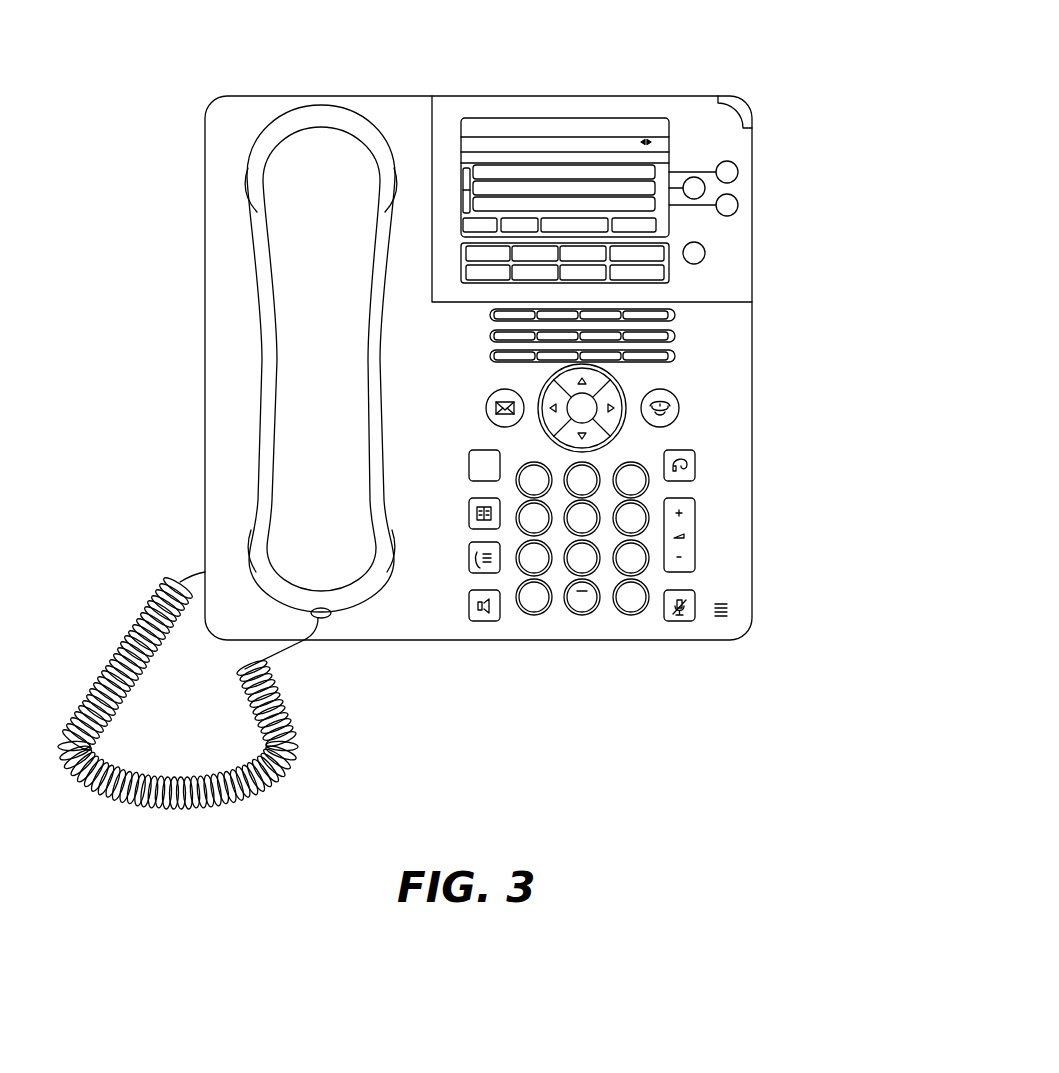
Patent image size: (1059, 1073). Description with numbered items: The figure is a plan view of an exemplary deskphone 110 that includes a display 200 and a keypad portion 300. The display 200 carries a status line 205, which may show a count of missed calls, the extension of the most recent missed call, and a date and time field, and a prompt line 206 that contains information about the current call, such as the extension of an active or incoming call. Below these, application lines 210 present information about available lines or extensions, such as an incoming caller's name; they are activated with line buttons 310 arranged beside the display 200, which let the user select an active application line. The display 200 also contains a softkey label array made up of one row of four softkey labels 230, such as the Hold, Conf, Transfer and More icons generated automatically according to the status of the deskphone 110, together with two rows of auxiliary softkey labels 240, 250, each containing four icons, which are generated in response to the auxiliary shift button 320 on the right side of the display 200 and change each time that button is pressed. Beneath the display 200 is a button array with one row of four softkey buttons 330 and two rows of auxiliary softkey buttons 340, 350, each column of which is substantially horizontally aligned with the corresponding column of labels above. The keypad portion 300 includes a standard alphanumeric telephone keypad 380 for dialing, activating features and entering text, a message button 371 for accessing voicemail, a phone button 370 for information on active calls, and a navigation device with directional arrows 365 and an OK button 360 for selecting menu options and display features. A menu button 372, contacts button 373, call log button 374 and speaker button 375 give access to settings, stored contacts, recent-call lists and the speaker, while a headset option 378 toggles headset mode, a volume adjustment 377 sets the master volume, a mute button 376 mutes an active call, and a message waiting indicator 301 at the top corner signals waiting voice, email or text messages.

The deskphone 110 is at (635, 758).
The display 200 is at (519, 118).
The status line 205 is at (563, 118).
The prompt line 206 is at (660, 153).
The application lines 210 is at (468, 172).
The softkey labels 230 is at (462, 213).
The auxiliary softkey labels 240 is at (670, 243).
The auxiliary softkey labels 250 is at (670, 277).
The keypad portion 300 is at (752, 546).
The message waiting indicator 301 is at (738, 100).
The line buttons 310 is at (738, 170).
The auxiliary shift button 320 is at (705, 253).
The softkey buttons 330 is at (675, 315).
The auxiliary softkey buttons 340 is at (675, 336).
The auxiliary softkey buttons 350 is at (675, 356).
The OK button 360 is at (590, 421).
The directional arrows 365 is at (604, 386).
The phone button 370 is at (680, 408).
The message button 371 is at (486, 409).
The menu button 372 is at (468, 462).
The contacts button 373 is at (528, 615).
The call log button 374 is at (462, 572).
The speaker button 375 is at (508, 620).
The mute button 376 is at (697, 620).
The volume adjustment 377 is at (696, 530).
The headset option 378 is at (696, 470).
The alphanumeric telephone keypad 380 is at (593, 615).